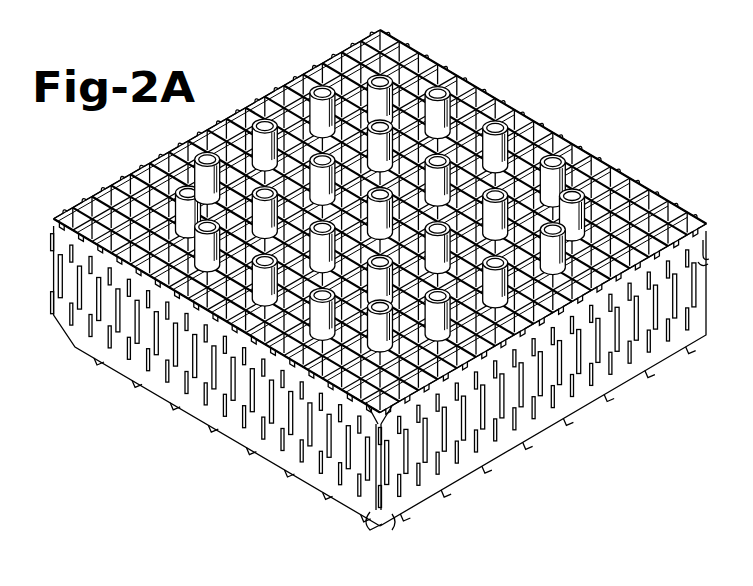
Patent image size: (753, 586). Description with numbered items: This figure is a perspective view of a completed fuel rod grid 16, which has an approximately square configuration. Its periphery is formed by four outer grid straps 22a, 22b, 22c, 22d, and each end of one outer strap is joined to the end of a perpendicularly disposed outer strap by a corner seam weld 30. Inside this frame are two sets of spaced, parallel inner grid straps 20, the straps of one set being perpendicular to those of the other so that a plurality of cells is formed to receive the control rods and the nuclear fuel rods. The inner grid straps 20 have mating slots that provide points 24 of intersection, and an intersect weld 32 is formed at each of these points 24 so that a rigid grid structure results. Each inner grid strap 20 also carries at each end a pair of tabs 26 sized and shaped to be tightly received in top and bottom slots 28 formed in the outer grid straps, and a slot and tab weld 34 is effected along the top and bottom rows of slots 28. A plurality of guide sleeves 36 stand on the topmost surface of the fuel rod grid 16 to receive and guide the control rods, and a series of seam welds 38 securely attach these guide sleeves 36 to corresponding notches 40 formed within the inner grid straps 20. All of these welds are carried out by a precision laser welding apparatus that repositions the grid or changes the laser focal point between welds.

The fuel rod grid 16 is at (590, 128).
The inner grid straps 20 is at (624, 170).
The outer grid strap 22a is at (620, 378).
The outer grid strap 22b is at (237, 110).
The outer grid strap 22c is at (430, 50).
The outer grid strap 22d is at (176, 407).
The points of intersection 24 is at (182, 217).
The tabs 26 is at (700, 264).
The slots 28 is at (665, 332).
The corner seam weld 30 is at (373, 492).
The intersect weld 32 is at (112, 248).
The slot and tab weld 34 is at (400, 505).
The guide sleeves 36 is at (152, 220).
The seam welds 38 is at (318, 297).
The notches 40 is at (502, 96).